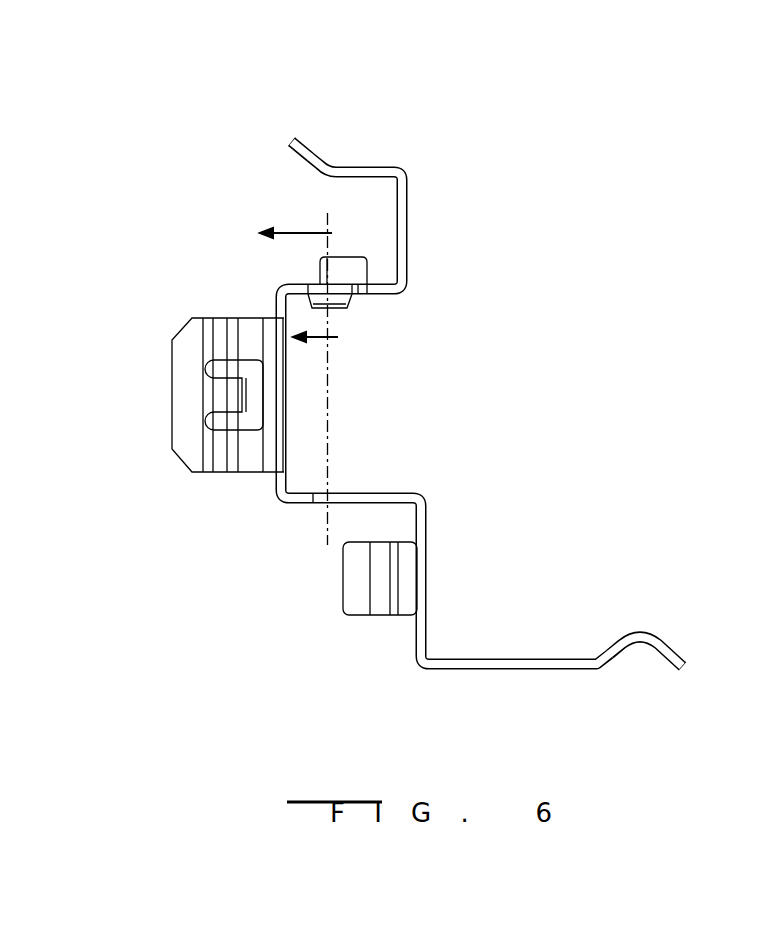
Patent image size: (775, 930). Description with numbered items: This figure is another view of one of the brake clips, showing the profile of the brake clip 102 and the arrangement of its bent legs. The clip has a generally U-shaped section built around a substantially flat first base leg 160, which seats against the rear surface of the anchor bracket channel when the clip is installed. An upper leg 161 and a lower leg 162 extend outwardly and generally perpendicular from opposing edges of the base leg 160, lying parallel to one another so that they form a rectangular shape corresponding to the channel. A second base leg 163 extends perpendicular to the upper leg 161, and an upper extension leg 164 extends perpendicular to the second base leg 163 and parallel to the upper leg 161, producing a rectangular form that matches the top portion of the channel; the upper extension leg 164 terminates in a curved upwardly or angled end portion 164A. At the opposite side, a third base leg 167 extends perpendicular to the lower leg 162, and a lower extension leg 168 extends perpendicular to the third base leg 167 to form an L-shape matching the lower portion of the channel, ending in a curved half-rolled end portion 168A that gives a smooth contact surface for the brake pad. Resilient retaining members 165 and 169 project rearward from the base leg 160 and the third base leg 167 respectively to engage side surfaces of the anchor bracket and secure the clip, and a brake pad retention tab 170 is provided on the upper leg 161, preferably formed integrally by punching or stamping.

The brake clip 102 is at (404, 386).
The first base leg 160 is at (287, 387).
The upper leg 161 is at (373, 294).
The lower leg 162 is at (363, 497).
The second base leg 163 is at (407, 223).
The upper extension leg 164 is at (363, 167).
The angled end portion 164A is at (302, 140).
The retaining member 165 is at (181, 395).
The third base leg 167 is at (425, 628).
The lower extension leg 168 is at (503, 667).
The curved half-rolled end portion 168A is at (658, 637).
The retaining member 169 is at (353, 588).
The brake pad retention tab 170 is at (343, 310).